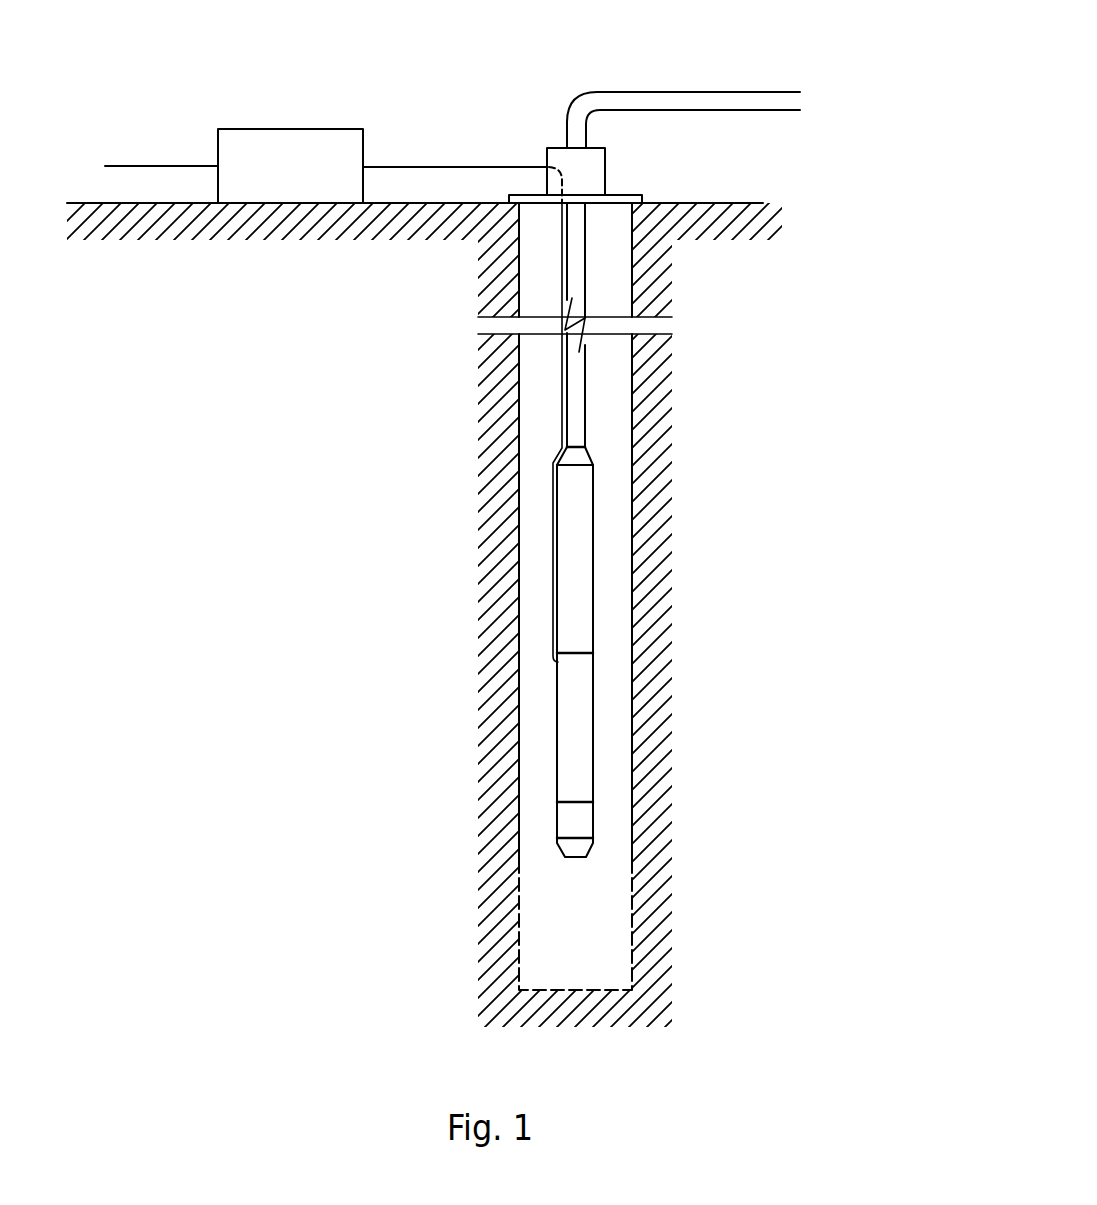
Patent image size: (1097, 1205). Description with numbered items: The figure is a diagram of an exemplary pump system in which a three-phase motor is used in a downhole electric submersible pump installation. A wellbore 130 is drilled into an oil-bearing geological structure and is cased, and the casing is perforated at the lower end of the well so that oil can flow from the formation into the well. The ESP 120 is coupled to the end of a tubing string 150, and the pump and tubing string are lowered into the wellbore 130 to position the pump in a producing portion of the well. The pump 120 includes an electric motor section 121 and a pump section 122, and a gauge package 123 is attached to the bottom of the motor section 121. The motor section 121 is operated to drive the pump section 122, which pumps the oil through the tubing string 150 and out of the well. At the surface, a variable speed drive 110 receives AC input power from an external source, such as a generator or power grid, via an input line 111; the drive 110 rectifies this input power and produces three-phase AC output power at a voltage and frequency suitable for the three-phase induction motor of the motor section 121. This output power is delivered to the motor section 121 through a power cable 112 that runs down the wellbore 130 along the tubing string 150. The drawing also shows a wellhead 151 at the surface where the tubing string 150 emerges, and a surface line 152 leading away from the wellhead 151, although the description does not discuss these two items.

The variable speed drive 110 is at (288, 129).
The input line 111 is at (150, 166).
The power cable 112 is at (450, 167).
The ESP 120 is at (574, 639).
The motor section 121 is at (593, 775).
The pump section 122 is at (598, 472).
The gauge package 123 is at (636, 829).
The wellbore 130 is at (632, 561).
The tubing string 150 is at (585, 398).
The wellhead 151 is at (605, 165).
The surface flowline 152 is at (695, 92).